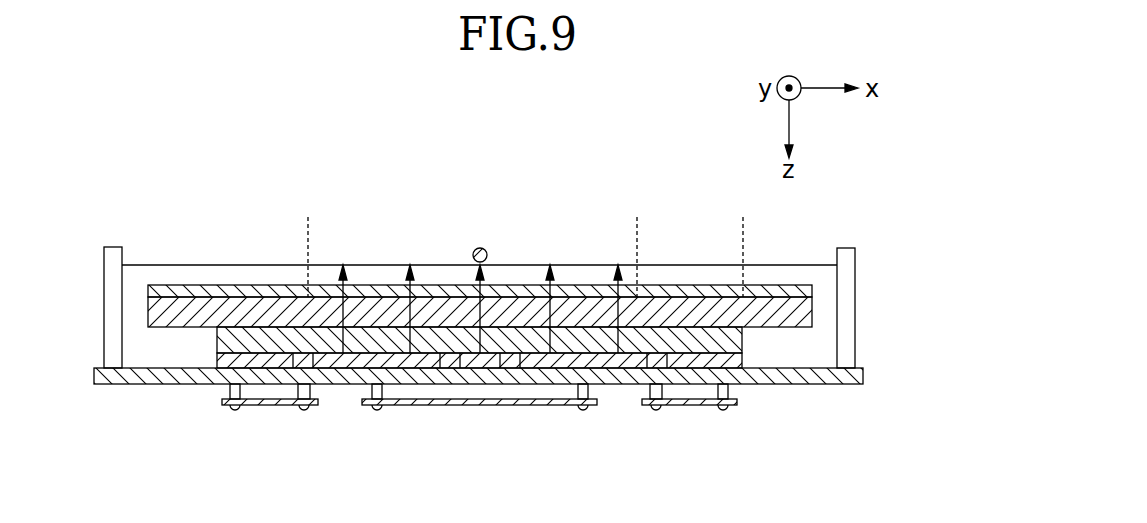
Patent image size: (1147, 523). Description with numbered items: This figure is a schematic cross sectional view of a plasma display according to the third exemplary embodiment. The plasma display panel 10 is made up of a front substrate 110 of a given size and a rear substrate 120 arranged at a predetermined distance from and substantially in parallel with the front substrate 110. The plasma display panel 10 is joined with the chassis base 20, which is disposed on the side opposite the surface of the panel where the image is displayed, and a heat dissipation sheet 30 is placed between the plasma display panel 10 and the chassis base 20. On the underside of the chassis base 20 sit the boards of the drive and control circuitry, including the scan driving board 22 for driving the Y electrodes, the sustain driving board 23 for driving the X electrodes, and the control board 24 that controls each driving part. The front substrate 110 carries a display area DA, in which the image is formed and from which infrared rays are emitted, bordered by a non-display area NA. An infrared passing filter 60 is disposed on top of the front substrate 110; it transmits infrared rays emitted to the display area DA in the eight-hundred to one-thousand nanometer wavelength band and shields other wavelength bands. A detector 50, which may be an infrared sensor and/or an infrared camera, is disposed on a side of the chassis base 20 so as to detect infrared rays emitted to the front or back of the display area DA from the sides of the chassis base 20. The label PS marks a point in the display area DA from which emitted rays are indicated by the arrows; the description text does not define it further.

The plasma display panel 10 is at (544, 288).
The front substrate 110 is at (787, 313).
The rear substrate 120 is at (723, 338).
The infrared passing filter 60 is at (213, 292).
The detector 50 is at (113, 247).
The chassis base 20 is at (777, 378).
The scan driving board 22 is at (268, 405).
The sustain driving board 23 is at (693, 405).
The control board 24 is at (495, 405).
The heat dissipation sheet 30 is at (333, 360).
The pressure sensor PS is at (482, 247).
The display area DA is at (625, 225).
The non-display area NA is at (731, 225).